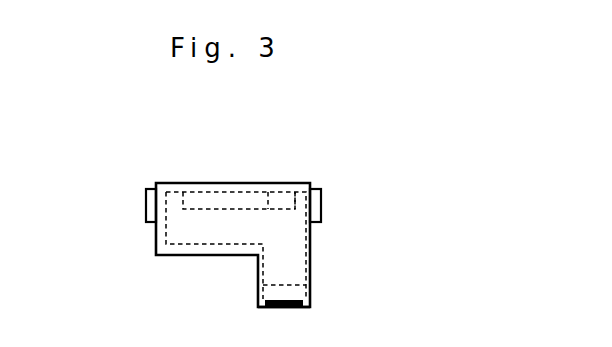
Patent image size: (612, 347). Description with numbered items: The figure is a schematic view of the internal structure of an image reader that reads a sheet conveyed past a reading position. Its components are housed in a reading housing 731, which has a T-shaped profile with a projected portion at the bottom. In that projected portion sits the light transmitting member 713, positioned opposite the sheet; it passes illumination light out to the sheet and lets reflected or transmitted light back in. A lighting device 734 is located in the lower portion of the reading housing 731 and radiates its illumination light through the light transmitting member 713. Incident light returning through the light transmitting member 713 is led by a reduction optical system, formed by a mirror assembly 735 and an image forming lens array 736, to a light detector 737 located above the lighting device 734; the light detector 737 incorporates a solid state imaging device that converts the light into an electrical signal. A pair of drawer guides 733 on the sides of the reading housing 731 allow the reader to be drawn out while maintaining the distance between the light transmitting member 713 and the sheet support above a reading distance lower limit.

The reading housing 731 is at (257, 183).
The drawer guide 733 is at (147, 189).
The lighting device 734 is at (300, 297).
The mirror assembly 735 is at (288, 256).
The image forming lens array 736 is at (218, 202).
The light detector 737 is at (282, 193).
The light transmitting member 713 is at (260, 302).